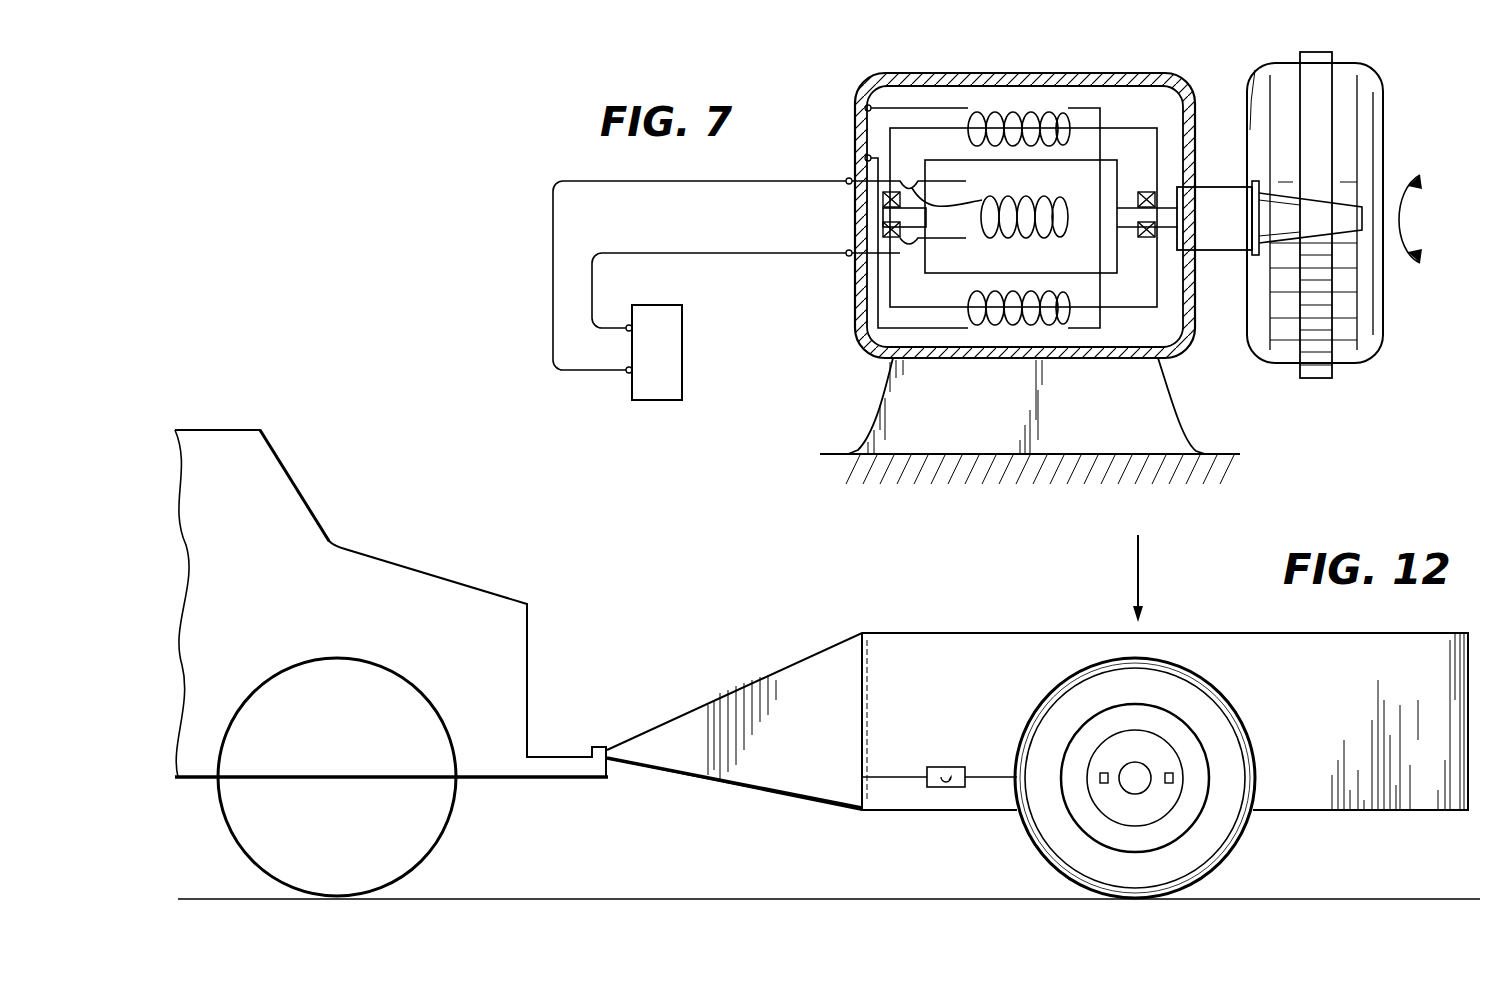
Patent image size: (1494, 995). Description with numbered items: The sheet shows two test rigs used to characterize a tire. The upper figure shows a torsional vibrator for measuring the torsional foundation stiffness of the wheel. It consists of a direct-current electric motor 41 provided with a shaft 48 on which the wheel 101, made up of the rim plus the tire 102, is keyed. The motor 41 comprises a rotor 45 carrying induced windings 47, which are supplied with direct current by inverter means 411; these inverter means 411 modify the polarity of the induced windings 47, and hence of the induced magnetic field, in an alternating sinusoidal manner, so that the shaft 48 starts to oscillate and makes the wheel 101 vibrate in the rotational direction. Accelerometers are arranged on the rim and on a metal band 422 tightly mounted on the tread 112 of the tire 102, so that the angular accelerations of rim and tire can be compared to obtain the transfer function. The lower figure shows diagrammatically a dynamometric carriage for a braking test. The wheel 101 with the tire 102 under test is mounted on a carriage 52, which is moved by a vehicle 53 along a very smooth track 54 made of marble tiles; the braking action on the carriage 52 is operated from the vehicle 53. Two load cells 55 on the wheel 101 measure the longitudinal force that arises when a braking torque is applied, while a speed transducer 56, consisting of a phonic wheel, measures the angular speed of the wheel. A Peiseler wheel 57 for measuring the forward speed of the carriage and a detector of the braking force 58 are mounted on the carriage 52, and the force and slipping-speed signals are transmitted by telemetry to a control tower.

In FIG. 7, the direct-current electric motor 41 is at (856, 147).
In FIG. 7, the inverter means 411 is at (683, 359).
In FIG. 7, the rotor 45 is at (1106, 158).
In FIG. 7, the induced windings 47 is at (980, 206).
In FIG. 7, the shaft 48 is at (1213, 182).
In FIG. 7, the tread 112 is at (1249, 78).
In FIG. 7, the wheel 101 is at (1362, 65).
In FIG. 12, the wheel 101 is at (1244, 845).
In FIG. 7, the tire 102 is at (1370, 105).
In FIG. 12, the tire 102 is at (1045, 860).
In FIG. 7, the metal band 422 is at (1318, 380).
In FIG. 12, the carriage 52 is at (913, 633).
In FIG. 12, the vehicle 53 is at (531, 619).
In FIG. 12, the track 54 is at (642, 899).
In FIG. 12, the load cells 55 is at (1100, 778).
In FIG. 12, the speed transducer 56 is at (1135, 738).
In FIG. 12, the Peiseler wheel 57 is at (1060, 696).
In FIG. 12, the detector of the braking force 58 is at (940, 767).